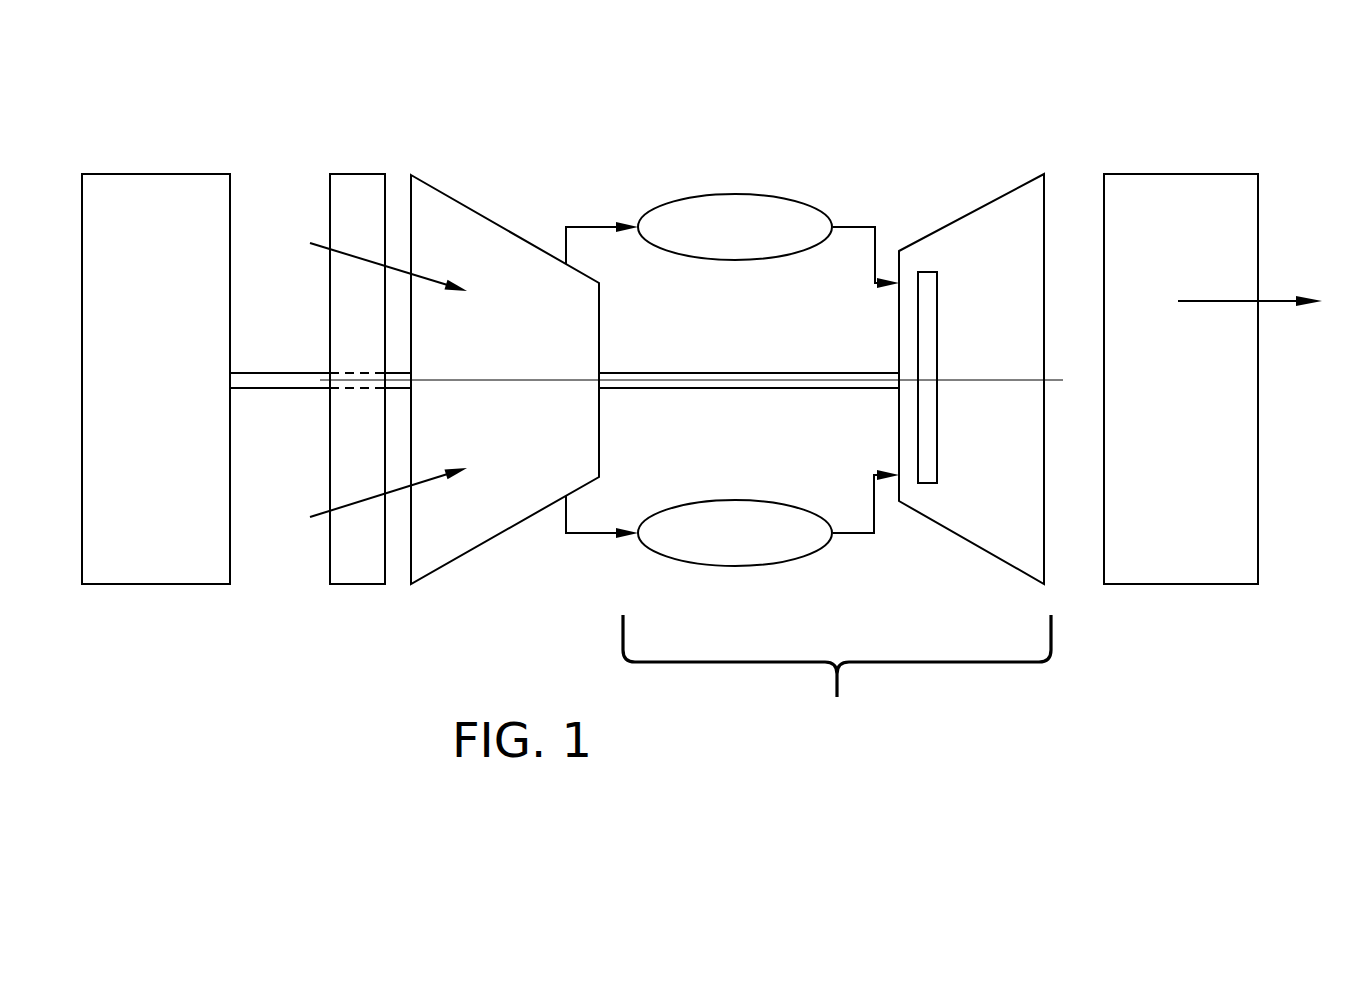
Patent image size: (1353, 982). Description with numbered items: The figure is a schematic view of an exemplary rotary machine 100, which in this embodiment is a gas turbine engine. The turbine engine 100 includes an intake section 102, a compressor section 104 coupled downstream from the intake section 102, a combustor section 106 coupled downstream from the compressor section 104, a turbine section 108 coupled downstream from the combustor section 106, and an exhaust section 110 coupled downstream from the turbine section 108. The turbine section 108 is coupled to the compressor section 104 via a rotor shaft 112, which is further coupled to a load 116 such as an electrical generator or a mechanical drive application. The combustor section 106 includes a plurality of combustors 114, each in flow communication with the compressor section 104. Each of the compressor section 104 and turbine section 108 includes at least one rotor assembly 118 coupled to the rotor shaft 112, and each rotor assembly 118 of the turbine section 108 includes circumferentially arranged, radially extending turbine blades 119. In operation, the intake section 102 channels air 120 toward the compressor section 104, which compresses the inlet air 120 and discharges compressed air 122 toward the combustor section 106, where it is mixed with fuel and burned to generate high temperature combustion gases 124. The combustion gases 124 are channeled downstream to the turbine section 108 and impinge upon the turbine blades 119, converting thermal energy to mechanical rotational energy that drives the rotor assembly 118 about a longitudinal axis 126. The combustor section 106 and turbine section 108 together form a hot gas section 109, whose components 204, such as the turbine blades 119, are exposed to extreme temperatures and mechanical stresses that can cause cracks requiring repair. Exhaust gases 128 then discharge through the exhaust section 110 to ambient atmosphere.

The rotary machine 100 is at (880, 102).
The intake section 102 is at (355, 174).
The compressor section 104 is at (435, 188).
The combustor section 106 is at (748, 343).
The turbine section 108 is at (1004, 195).
The hot gas section 109 is at (837, 675).
The exhaust section 110 is at (1180, 174).
The rotor shaft 112 is at (732, 389).
The combustor 114 is at (757, 242).
The load 116 is at (157, 174).
The rotor assembly 118 is at (510, 205).
The turbine blade 119 is at (849, 377).
The component 204 is at (920, 325).
The air 120 is at (322, 240).
The compressed air 122 is at (595, 227).
The combustion gases 124 is at (853, 236).
The longitudinal axis 126 is at (1063, 379).
The exhaust gases 128 is at (1208, 301).